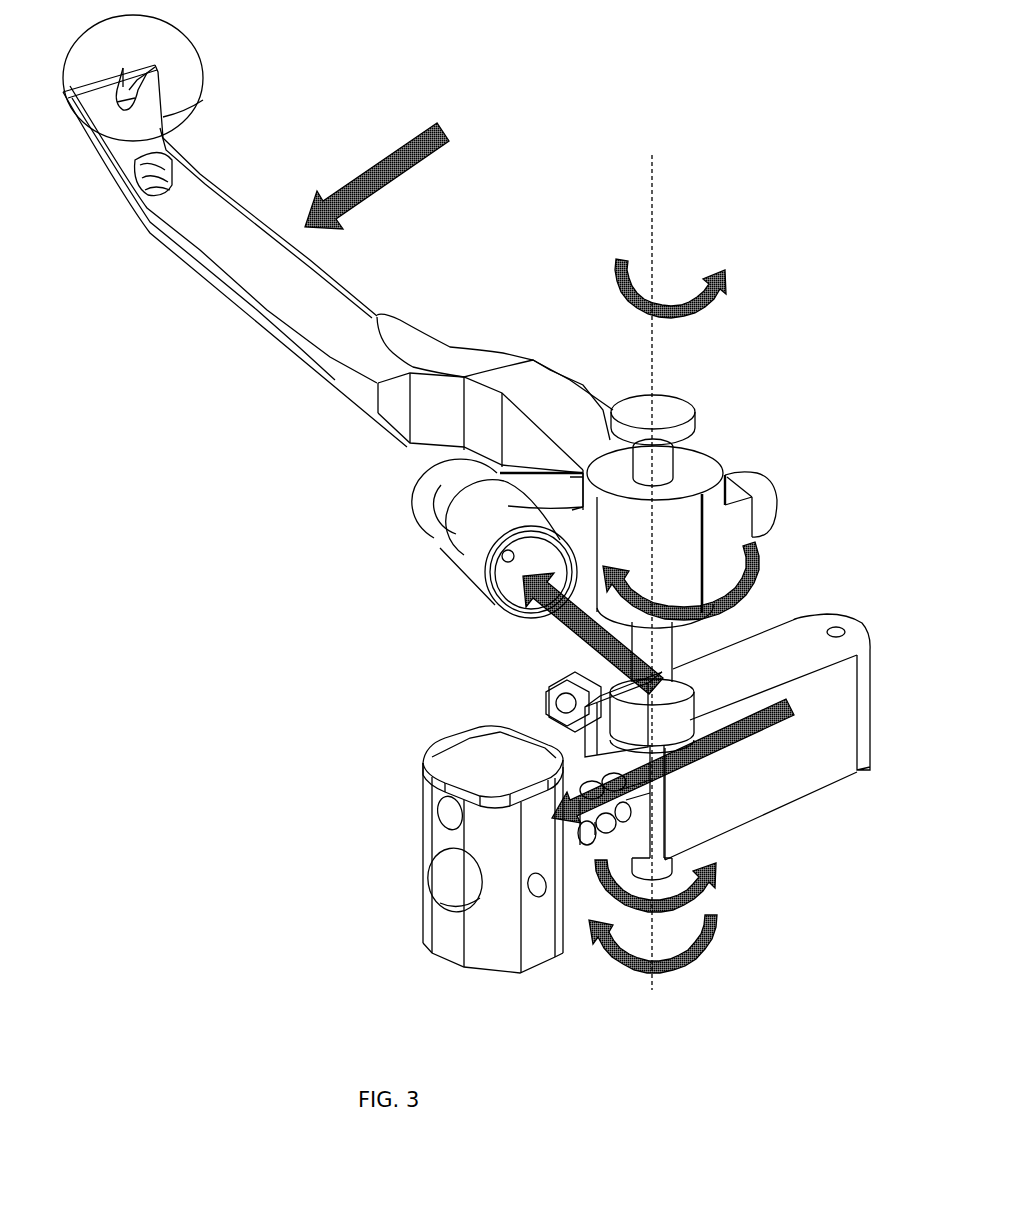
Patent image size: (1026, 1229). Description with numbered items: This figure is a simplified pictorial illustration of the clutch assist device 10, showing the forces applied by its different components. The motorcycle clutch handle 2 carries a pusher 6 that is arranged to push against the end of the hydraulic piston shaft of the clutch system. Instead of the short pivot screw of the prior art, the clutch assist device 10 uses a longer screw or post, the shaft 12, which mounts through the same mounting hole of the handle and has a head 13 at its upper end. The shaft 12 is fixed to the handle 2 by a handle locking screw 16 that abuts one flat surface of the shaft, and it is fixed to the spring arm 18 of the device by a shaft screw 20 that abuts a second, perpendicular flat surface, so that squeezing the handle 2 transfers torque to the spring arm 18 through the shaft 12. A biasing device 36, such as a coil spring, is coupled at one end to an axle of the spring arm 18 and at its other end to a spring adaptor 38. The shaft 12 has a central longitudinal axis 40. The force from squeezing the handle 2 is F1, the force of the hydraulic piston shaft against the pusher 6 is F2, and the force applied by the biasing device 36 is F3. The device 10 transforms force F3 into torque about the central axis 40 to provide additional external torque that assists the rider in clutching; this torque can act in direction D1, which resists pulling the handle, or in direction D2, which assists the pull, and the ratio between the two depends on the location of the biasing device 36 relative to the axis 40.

The handle 2 is at (208, 252).
The pusher 6 is at (478, 585).
The clutch assist device 10 is at (793, 865).
The shaft 12 is at (660, 467).
The head 13 is at (675, 407).
The handle locking screw 16 is at (762, 497).
The spring arm 18 is at (803, 780).
The shaft screw 20 is at (557, 718).
The biasing device 36 is at (585, 840).
The spring adaptor 38 is at (482, 963).
The central longitudinal axis 40 is at (652, 208).
The direction D1 is at (760, 567).
The direction D2 is at (717, 297).
The force F1 is at (377, 193).
The force F2 is at (563, 633).
The force F3 is at (693, 770).